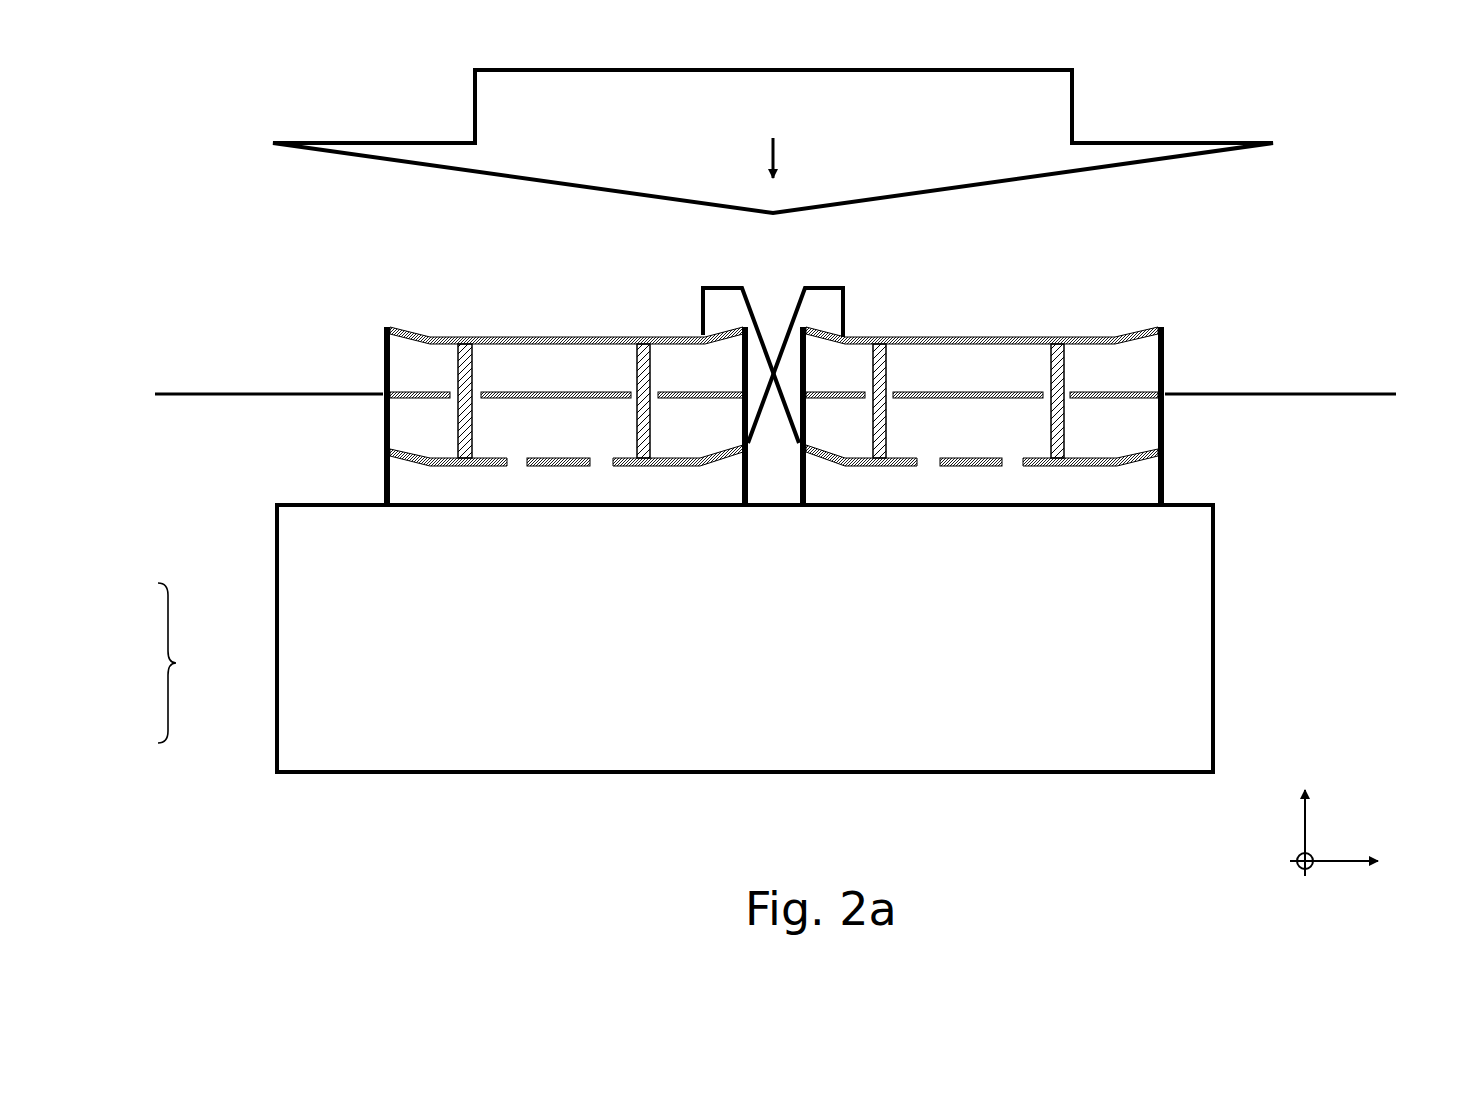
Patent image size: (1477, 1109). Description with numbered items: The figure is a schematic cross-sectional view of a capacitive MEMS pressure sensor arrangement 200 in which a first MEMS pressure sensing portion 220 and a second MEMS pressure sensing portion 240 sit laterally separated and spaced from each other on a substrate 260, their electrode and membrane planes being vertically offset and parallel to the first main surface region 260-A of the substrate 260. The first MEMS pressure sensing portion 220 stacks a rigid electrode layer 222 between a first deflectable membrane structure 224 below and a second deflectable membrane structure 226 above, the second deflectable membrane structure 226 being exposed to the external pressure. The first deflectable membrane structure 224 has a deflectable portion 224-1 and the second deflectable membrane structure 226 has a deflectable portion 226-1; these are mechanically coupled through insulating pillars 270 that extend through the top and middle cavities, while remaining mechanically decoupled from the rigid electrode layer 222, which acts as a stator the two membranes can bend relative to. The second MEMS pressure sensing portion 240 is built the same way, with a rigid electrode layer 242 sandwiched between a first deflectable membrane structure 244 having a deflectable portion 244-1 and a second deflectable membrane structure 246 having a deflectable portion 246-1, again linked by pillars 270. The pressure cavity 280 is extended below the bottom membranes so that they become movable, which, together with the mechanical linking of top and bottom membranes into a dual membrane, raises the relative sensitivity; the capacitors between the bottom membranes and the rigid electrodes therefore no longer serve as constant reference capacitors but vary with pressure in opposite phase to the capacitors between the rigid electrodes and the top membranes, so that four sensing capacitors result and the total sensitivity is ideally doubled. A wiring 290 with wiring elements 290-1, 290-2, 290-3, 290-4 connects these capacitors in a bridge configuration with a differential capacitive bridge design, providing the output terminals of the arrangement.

The capacitive MEMS pressure sensor arrangement 200 is at (126, 77).
The first MEMS pressure sensing portion 220 is at (752, 258).
The second MEMS pressure sensing portion 240 is at (1172, 258).
The rigid electrode layer 222 is at (381, 401).
The first deflectable membrane structure 224 is at (381, 455).
The deflectable portion 224-1 is at (449, 470).
The second deflectable membrane structure 226 is at (381, 326).
The deflectable portion 226-1 is at (550, 336).
The rigid electrode layer 242 is at (1168, 402).
The first deflectable membrane structure 244 is at (1170, 453).
The deflectable portion 244-1 is at (877, 470).
The second deflectable membrane structure 246 is at (1166, 330).
The deflectable portion 246-1 is at (995, 336).
The substrate 260 is at (1200, 627).
The first main surface region 260-A is at (1192, 505).
The pillars 270 is at (478, 433).
The pressure cavity 280 is at (429, 353).
The wiring 290 is at (153, 663).
The wiring element 290-1 is at (212, 392).
The wiring element 290-2 is at (850, 305).
The wiring element 290-3 is at (698, 305).
The wiring element 290-4 is at (1334, 392).